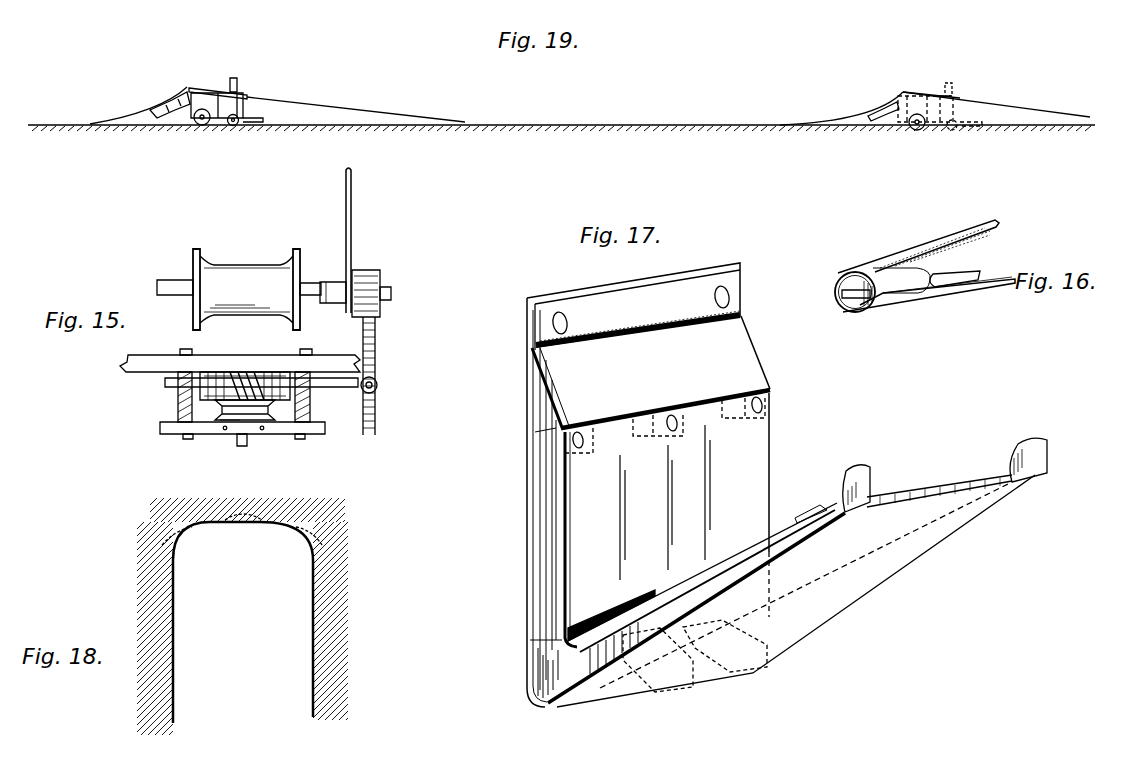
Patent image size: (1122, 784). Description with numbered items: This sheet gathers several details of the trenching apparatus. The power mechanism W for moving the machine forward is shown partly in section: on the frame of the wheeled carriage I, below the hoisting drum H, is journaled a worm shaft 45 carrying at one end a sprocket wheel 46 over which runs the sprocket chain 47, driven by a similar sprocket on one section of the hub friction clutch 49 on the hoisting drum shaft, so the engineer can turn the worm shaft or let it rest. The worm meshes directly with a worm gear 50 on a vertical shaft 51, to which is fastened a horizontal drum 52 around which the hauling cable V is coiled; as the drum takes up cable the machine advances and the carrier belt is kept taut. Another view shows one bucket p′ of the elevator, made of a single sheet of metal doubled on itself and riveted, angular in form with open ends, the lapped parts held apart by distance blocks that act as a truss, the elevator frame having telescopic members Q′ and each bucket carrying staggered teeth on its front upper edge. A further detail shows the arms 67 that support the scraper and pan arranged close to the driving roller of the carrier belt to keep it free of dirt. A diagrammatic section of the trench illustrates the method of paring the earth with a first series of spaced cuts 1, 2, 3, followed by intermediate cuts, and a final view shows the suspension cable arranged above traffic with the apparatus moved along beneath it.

In FIG. 15, the hoisting drum H is at (246, 289).
In FIG. 15, the hub friction clutch 49 is at (380, 300).
In FIG. 15, the sprocket chain 47 is at (377, 349).
In FIG. 15, the sprocket wheel 46 is at (377, 417).
In FIG. 15, the worm shaft 45 is at (330, 389).
In FIG. 15, the wheeled carriage I is at (150, 366).
In FIG. 15, the vertical shaft 51 is at (246, 357).
In FIG. 15, the worm gear 50 is at (268, 372).
In FIG. 15, the hauling cable V is at (270, 409).
In FIG. 15, the power mechanism W is at (318, 436).
In FIG. 15, the horizontal drum 52 is at (220, 420).
In FIG. 18, the cut 1 is at (165, 545).
In FIG. 18, the cut 2 is at (240, 508).
In FIG. 18, the cut 3 is at (323, 543).
In FIG. 17, the bucket p′ is at (696, 520).
In FIG. 17, the telescopic members Q′ is at (874, 479).
In FIG. 16, the arms 67 is at (965, 277).